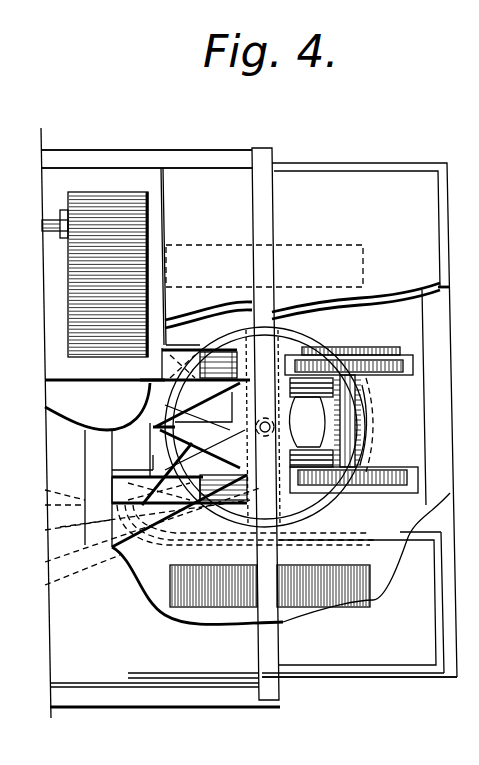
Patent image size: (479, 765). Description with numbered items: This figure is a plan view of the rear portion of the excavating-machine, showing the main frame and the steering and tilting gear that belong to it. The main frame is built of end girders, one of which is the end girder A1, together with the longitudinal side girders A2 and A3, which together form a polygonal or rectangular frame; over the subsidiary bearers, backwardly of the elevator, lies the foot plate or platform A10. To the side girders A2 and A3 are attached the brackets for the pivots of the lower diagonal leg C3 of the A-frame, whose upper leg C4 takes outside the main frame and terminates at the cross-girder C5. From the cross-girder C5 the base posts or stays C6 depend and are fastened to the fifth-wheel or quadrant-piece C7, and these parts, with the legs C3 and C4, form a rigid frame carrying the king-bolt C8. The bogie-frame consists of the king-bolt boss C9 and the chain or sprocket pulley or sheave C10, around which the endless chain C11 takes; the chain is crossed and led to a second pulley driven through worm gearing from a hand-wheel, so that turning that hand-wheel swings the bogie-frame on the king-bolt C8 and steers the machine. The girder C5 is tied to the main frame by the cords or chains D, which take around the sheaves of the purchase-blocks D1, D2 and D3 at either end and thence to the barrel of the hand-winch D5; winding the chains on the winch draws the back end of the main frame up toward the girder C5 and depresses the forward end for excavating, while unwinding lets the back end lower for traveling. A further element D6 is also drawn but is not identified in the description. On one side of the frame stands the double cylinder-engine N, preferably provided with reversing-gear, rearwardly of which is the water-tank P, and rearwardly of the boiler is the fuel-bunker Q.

The upper leg of the A-frame C4 is at (130, 160).
The side girder A2 is at (343, 165).
The end girder A1 is at (424, 481).
The side girder A3 is at (340, 680).
The foot plate or platform A10 is at (247, 427).
The cross-girder C5 is at (272, 217).
The base posts or stays C6 is at (277, 318).
The fifth-wheel or quadrant-piece C7 is at (308, 318).
The lower diagonal leg of the A-frame C3 is at (182, 345).
The endless chain C11 is at (222, 335).
The king-bolt C8 is at (205, 450).
The king-bolt boss C9 is at (315, 422).
The chain or sprocket pulley or sheave C10 is at (140, 398).
The double cylinder-engine N is at (95, 274).
The water-tank P is at (363, 265).
The cords or chains D is at (265, 434).
The purchase-block D1 is at (160, 366).
The purchase-block D2 is at (366, 415).
The purchase-block D3 is at (85, 570).
The hand-winch D5 is at (346, 346).
The rod D6 is at (315, 522).
The fuel-bunker Q is at (270, 586).